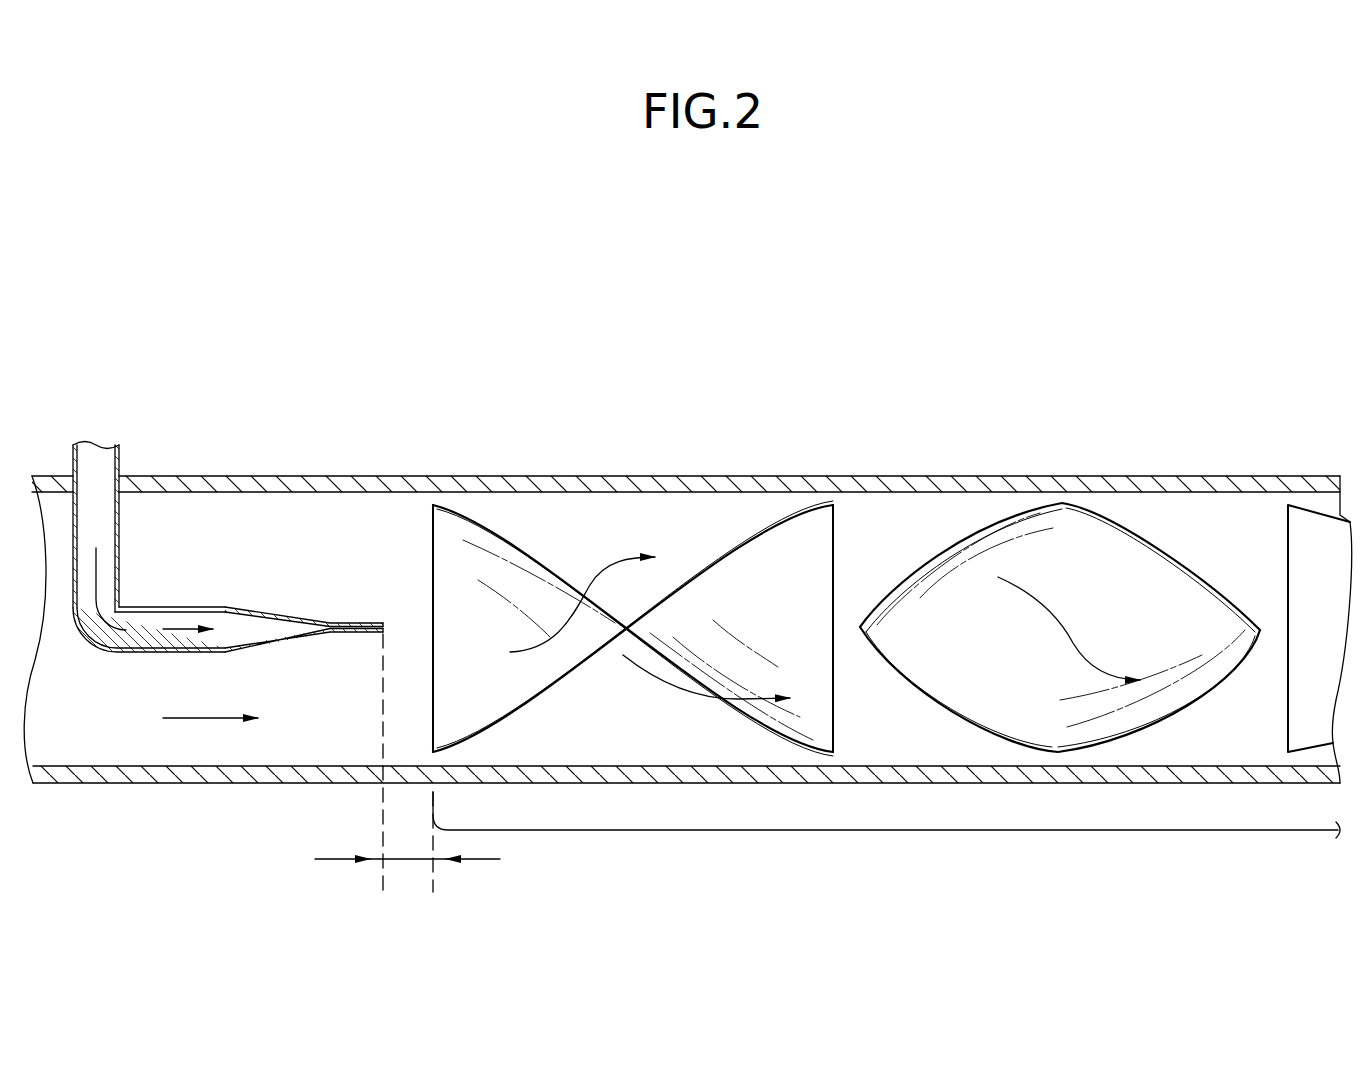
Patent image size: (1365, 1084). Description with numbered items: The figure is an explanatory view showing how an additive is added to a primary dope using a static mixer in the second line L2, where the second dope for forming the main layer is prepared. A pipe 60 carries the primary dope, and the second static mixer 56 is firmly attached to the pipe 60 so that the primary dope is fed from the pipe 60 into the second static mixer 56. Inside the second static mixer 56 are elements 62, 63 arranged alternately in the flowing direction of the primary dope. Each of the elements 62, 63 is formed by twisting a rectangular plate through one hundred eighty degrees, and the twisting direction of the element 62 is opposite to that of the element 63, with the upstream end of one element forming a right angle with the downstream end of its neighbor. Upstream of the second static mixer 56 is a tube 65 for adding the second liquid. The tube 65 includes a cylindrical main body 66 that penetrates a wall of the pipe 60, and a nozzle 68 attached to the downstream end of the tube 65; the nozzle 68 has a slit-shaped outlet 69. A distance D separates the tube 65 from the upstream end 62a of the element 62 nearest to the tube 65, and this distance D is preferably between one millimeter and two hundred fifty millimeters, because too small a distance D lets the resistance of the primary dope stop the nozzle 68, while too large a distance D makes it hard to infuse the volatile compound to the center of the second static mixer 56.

The second static mixer 56 is at (893, 830).
The pipe 60 is at (557, 477).
The element 62 is at (803, 510).
The upstream end of the element 62a is at (433, 507).
The element 63 is at (1052, 505).
The tube 65 is at (128, 448).
The cylindrical main body 66 is at (125, 655).
The nozzle 68 is at (275, 600).
The slit-shaped outlet 69 is at (386, 628).
The distance D is at (407, 878).
The second line L2 is at (718, 323).